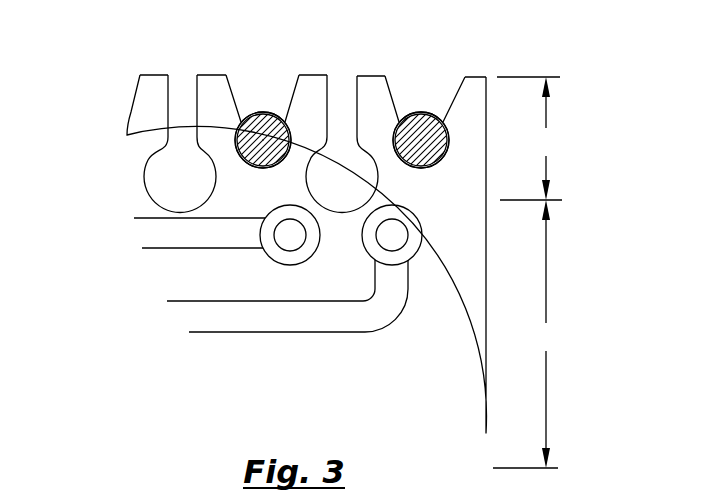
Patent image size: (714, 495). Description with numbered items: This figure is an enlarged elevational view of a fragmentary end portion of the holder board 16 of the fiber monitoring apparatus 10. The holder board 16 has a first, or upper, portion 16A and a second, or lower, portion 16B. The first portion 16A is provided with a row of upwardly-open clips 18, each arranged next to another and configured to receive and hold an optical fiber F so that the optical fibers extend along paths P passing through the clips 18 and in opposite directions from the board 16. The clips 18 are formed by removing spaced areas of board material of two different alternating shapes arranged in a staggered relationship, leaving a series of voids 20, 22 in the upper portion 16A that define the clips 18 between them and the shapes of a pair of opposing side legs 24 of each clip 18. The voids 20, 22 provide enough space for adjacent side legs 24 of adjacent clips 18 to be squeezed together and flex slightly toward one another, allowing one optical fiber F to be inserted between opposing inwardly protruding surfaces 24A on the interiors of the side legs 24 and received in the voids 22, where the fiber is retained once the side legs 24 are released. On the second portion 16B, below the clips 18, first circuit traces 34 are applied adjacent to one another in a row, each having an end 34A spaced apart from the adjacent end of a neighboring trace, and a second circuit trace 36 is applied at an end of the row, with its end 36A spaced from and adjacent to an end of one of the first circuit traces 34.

The fiber monitoring apparatus 10 is at (372, 239).
The holder board 16 is at (265, 380).
The first portion 16A is at (533, 138).
The second portion 16B is at (530, 334).
The clips 18 is at (278, 78).
The voids 20 is at (166, 187).
The voids 22 is at (272, 166).
The side legs 24 is at (155, 75).
The inwardly protruding surfaces 24A is at (240, 118).
The first circuit traces 34 is at (148, 232).
The opposite end 34A is at (278, 245).
The second circuit traces 36 is at (282, 320).
The opposite end 36A is at (398, 250).
The optical fiber F is at (252, 113).
The path P is at (270, 138).